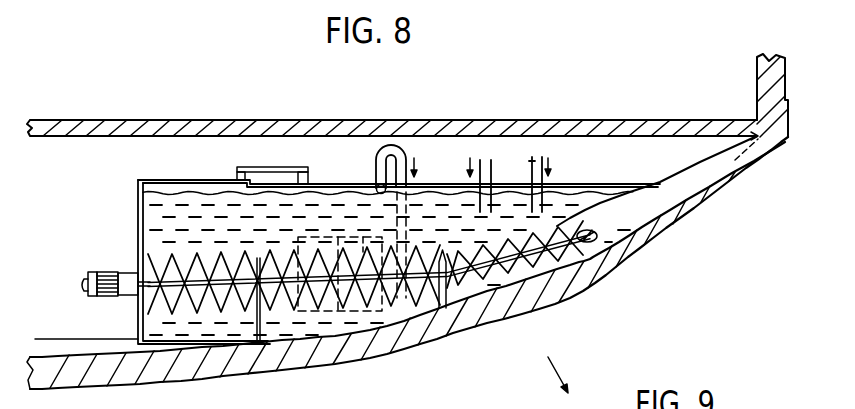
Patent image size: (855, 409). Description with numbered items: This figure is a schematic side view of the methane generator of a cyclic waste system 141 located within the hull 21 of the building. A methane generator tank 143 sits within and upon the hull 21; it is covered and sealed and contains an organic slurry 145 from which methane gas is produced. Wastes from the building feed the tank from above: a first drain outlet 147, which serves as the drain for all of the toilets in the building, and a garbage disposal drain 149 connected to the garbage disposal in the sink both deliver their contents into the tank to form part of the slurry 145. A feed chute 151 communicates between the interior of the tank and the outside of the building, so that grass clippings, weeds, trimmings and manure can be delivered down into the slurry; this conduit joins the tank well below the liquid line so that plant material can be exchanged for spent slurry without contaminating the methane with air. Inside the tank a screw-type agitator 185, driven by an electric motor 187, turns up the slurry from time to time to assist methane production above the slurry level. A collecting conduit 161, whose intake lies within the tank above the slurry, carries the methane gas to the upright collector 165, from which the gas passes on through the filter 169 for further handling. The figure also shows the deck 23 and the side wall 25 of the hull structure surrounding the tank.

The hull 21 is at (219, 372).
The deck 23 is at (258, 120).
The bulwark side wall 25 is at (797, 15).
The cyclic waste system 141 is at (157, 173).
The methane generator tank 143 is at (138, 198).
The organic slurry 145 is at (154, 227).
The first drain outlet 147 is at (486, 160).
The garbage disposal drain 149 is at (536, 156).
The feed chute 151 is at (707, 163).
The collecting conduit 161 is at (391, 146).
The upright collector 165 is at (371, 223).
The filter 169 is at (316, 239).
The screw-type agitator 185 is at (238, 300).
The electric motor 187 is at (105, 289).